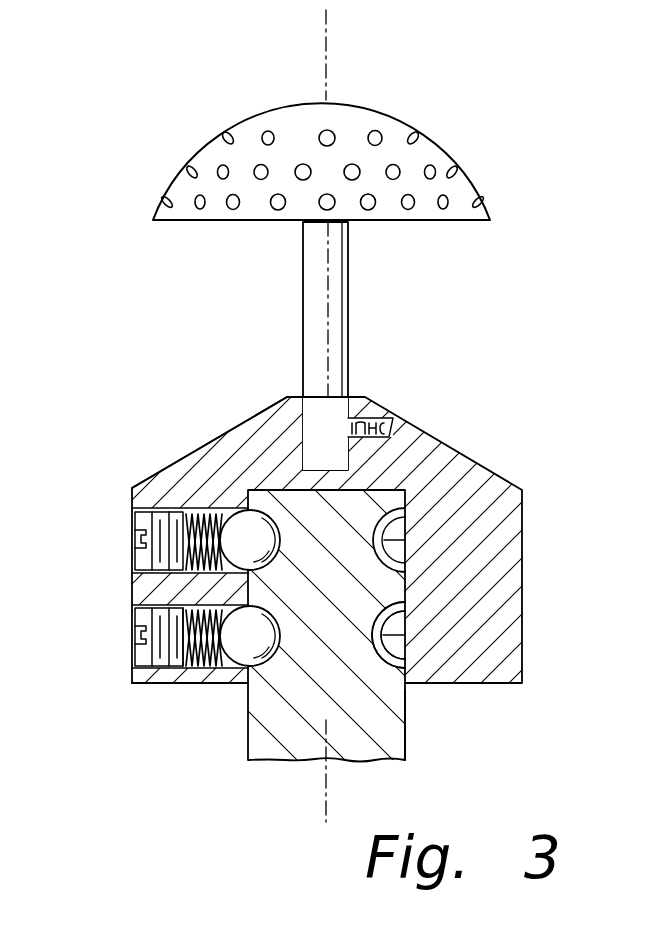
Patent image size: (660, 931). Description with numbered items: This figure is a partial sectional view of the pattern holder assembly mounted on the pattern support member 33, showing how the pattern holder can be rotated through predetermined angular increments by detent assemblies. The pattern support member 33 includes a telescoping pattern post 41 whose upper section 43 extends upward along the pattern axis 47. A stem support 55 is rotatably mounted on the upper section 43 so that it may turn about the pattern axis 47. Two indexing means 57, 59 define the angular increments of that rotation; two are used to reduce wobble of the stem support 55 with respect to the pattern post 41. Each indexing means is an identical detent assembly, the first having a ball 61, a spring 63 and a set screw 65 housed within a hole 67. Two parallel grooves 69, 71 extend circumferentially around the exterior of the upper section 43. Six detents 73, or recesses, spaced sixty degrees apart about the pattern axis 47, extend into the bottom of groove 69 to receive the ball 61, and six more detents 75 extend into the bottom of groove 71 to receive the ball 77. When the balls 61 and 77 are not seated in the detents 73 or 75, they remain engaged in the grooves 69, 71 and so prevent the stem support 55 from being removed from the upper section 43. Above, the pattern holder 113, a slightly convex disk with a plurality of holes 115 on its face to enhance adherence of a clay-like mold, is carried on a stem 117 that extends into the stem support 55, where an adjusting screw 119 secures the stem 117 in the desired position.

The pattern support member 33 is at (513, 505).
The pattern post 41 is at (404, 757).
The upper section 43 is at (405, 722).
The pattern axis 47 is at (327, 33).
The stem support 55 is at (163, 462).
The indexing means 57 is at (178, 578).
The indexing means 59 is at (175, 685).
The ball 61 is at (238, 510).
The spring 63 is at (192, 510).
The set screw 65 is at (142, 517).
The hole 67 is at (132, 573).
The groove 69 is at (243, 528).
The groove 71 is at (245, 670).
The detents 73 is at (268, 512).
The detents 75 is at (257, 668).
The ball 77 is at (203, 673).
The pattern holder 113 is at (220, 152).
The holes 115 is at (377, 134).
The stem 117 is at (338, 282).
The adjusting screw 119 is at (376, 420).